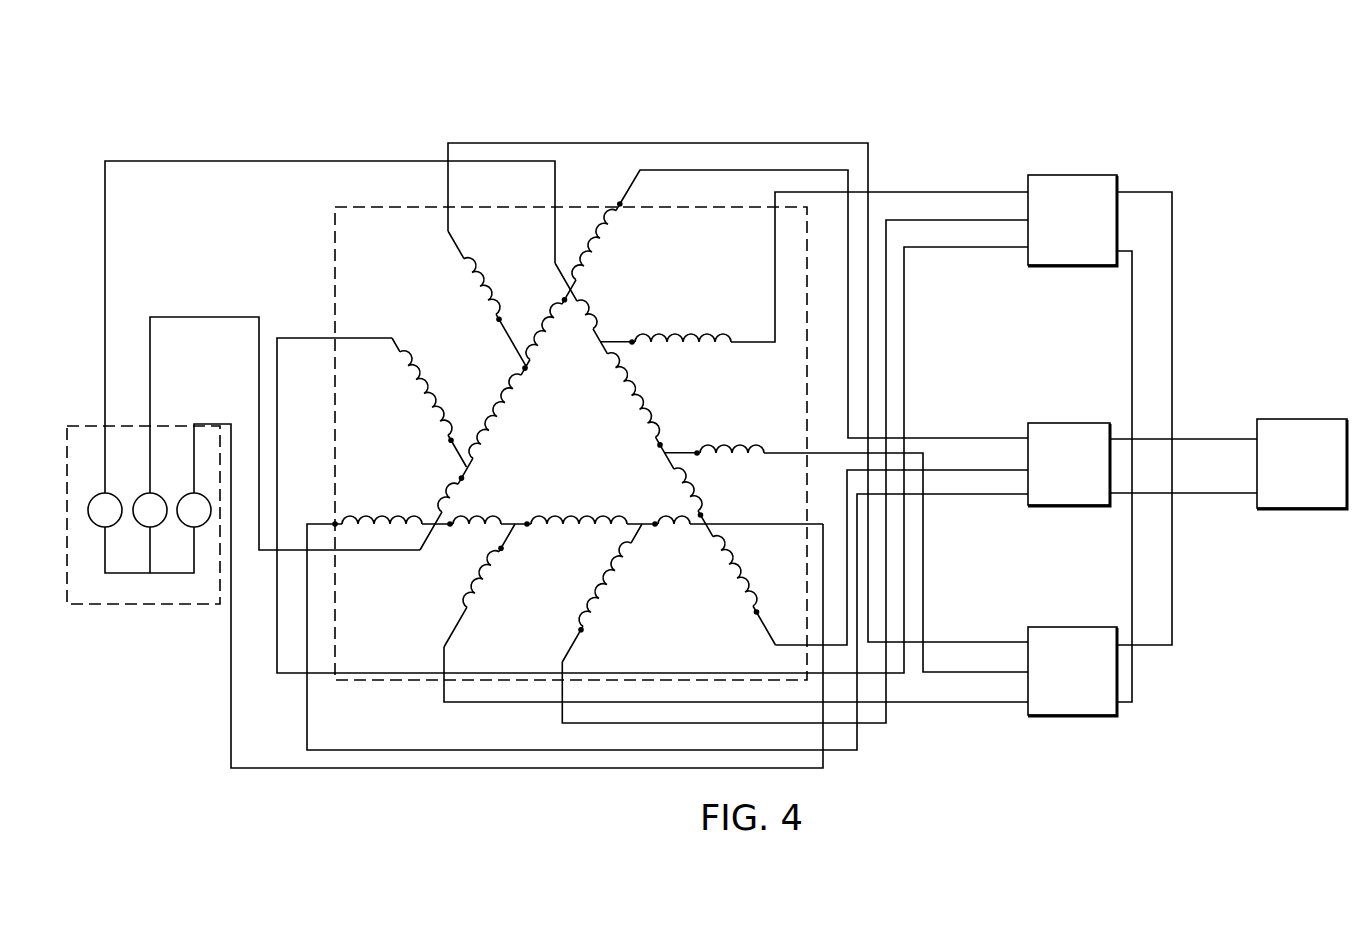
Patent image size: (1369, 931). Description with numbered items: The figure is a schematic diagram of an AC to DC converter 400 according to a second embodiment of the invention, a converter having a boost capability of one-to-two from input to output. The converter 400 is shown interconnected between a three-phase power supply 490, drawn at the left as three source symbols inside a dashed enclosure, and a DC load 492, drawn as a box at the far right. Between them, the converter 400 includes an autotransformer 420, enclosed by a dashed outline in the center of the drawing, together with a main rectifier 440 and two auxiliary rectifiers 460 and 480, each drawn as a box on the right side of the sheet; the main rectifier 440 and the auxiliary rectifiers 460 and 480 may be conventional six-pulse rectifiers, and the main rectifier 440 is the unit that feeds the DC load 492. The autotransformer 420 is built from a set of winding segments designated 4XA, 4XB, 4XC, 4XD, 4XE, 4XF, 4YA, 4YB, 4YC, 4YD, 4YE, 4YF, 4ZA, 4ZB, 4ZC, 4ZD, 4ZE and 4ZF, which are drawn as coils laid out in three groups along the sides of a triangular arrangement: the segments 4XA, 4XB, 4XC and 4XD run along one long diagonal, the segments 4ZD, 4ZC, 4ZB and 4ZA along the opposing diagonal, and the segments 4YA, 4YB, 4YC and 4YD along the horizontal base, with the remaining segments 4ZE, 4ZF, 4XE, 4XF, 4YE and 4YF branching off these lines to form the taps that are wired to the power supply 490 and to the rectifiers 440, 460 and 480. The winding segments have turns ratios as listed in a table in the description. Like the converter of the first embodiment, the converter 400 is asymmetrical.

The AC to DC converter 400 is at (158, 114).
The autotransformer 420 is at (333, 224).
The main rectifier 440 is at (1085, 423).
The auxiliary rectifier 460 is at (1092, 175).
The auxiliary rectifier 480 is at (1091, 627).
The 3-phase power supply 490 is at (174, 424).
The DC load 492 is at (1317, 419).
The winding segment 4XA is at (588, 243).
The winding segment 4XB is at (539, 329).
The winding segment 4XC is at (493, 414).
The winding segment 4XD is at (437, 494).
The winding segment 4XE is at (474, 577).
The winding segment 4XF is at (600, 582).
The winding segment 4YA is at (382, 509).
The winding segment 4YB is at (477, 509).
The winding segment 4YC is at (579, 509).
The winding segment 4YD is at (674, 508).
The winding segment 4YE is at (732, 439).
The winding segment 4YF is at (683, 326).
The winding segment 4ZA is at (743, 569).
The winding segment 4ZB is at (699, 488).
The winding segment 4ZC is at (639, 393).
The winding segment 4ZD is at (600, 313).
The winding segment 4ZE is at (491, 284).
The winding segment 4ZF is at (428, 391).